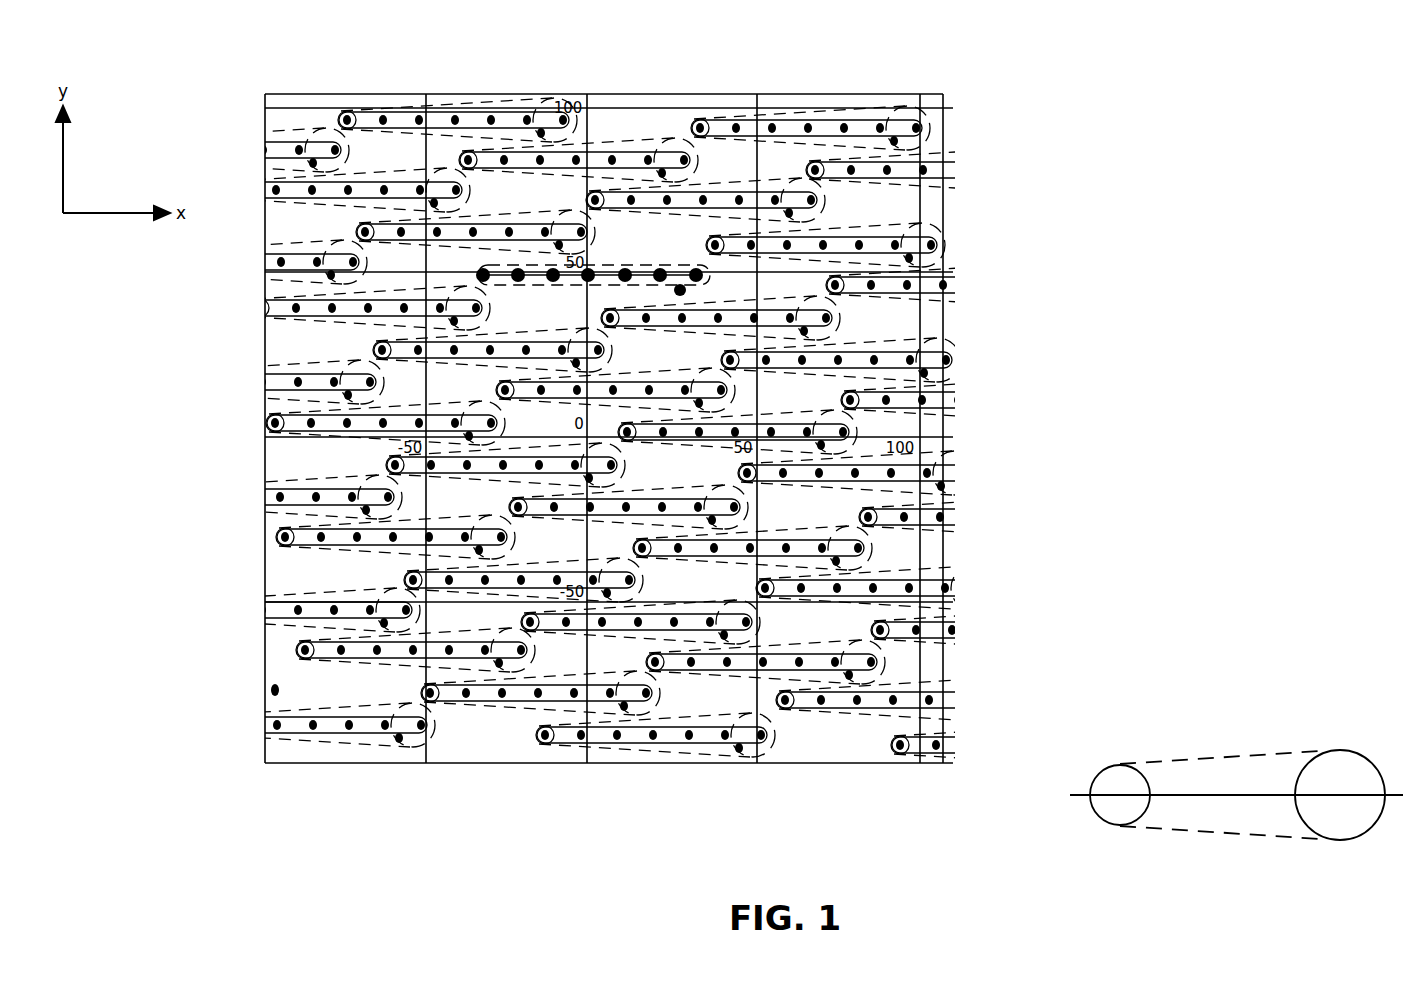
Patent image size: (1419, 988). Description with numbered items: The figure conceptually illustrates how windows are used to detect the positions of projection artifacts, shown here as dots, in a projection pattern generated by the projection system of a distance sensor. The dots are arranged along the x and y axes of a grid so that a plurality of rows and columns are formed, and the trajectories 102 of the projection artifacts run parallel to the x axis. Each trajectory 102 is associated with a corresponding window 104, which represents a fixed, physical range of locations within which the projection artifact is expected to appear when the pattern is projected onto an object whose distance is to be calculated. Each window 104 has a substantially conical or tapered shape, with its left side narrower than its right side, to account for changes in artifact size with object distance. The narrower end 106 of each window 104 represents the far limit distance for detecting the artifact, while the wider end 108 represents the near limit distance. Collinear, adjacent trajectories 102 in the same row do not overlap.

The trajectory 102 is at (487, 108).
The window 104 is at (467, 103).
The narrower end 106 is at (1120, 765).
The wider end 108 is at (1340, 750).